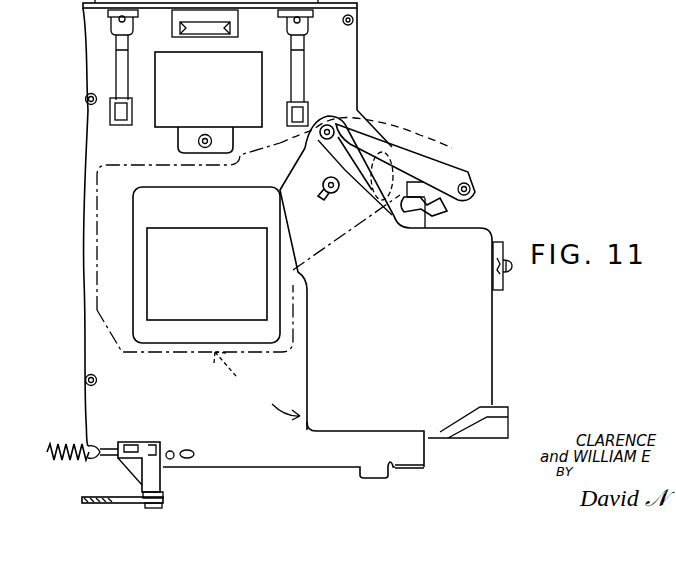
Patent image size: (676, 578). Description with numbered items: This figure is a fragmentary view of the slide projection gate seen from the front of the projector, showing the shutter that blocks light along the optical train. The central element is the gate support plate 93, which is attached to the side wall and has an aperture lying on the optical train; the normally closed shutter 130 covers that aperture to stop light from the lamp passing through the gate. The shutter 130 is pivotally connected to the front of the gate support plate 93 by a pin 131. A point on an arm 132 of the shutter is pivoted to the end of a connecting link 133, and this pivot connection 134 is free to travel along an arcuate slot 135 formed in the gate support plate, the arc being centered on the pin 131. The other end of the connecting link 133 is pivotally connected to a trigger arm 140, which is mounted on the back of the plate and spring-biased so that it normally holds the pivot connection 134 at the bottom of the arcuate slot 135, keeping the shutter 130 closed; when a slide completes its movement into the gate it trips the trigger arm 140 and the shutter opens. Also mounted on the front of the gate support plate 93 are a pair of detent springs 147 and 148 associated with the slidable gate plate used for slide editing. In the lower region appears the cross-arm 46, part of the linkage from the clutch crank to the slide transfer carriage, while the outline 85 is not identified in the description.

The cross-arm 46 is at (121, 502).
The coin chute frame 85 is at (147, 278).
The gate support plate 93 is at (350, 62).
The shutter 130 is at (487, 318).
The pin 131 is at (333, 192).
The arm 132 is at (355, 143).
The connecting link 133 is at (426, 172).
The pivot connection 134 is at (328, 124).
The arcuate slot 135 is at (398, 133).
The trigger arm 140 is at (455, 209).
The detent spring 147 is at (297, 62).
The detent spring 148 is at (118, 60).